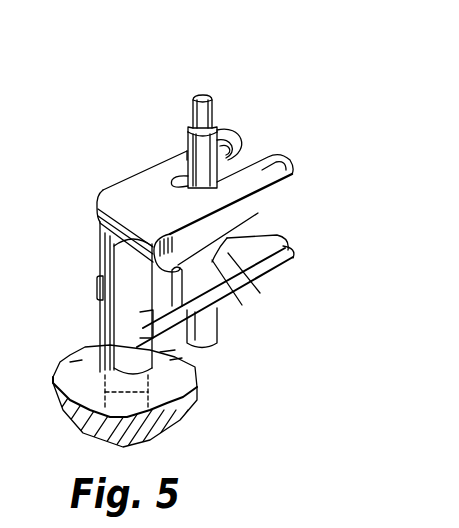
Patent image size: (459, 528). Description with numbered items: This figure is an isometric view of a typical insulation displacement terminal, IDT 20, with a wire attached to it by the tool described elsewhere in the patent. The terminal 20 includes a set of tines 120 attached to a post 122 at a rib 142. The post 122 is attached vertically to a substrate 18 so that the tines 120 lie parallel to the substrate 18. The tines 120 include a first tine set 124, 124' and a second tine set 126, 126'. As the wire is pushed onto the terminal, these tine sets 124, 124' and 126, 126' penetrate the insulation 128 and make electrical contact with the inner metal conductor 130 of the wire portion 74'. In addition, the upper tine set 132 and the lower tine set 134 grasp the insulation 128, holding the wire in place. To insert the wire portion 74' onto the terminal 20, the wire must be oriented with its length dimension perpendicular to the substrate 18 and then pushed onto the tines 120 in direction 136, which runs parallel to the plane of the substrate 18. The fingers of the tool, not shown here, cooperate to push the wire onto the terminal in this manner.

The direction 136 is at (328, 38).
The wire portion 74' is at (172, 99).
The inner metal conductor 130 is at (213, 100).
The insulation 128 is at (188, 140).
The tines 120 is at (294, 156).
The first tine set 124 is at (253, 141).
The upper tine set 132 is at (207, 188).
The IDT 20 is at (82, 226).
The rib 142 is at (100, 268).
The post 122 is at (100, 336).
The second tine set 126 is at (228, 223).
The second tine set 126' is at (235, 291).
The first tine set 124' is at (256, 289).
The lower tine set 134 is at (210, 296).
The substrate 18 is at (63, 372).